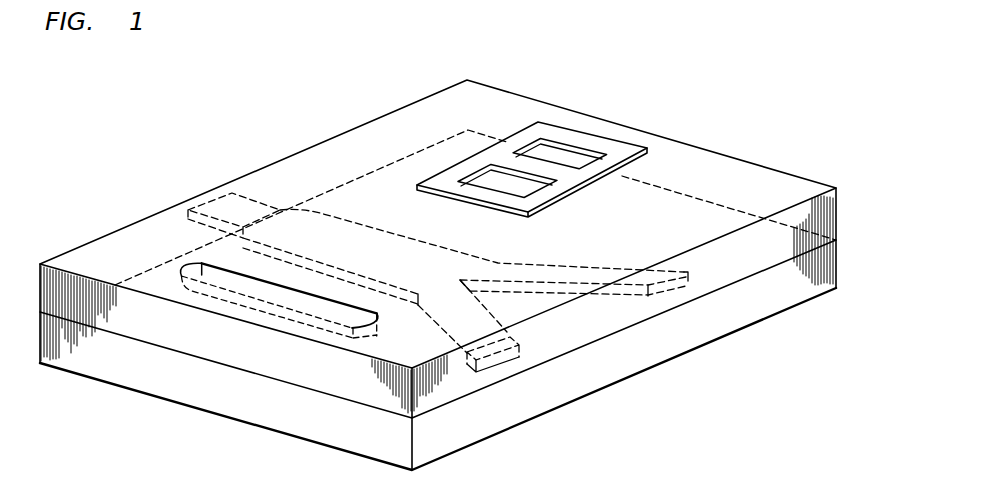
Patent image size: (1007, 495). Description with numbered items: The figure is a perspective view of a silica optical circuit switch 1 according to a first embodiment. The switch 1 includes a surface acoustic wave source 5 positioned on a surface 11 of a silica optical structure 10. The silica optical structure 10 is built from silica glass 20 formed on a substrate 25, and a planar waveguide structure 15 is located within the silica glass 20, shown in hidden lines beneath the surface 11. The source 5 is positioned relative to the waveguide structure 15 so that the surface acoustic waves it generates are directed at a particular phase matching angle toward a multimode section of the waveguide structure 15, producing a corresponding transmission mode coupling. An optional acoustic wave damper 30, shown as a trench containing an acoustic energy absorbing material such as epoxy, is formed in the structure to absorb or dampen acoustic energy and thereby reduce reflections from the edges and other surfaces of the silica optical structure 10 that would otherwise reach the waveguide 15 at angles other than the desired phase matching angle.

The switch 1 is at (236, 103).
The surface acoustic wave (SAW) source 5 is at (570, 130).
The silica optical structure 10 is at (200, 408).
The surface 11 is at (642, 131).
The planar waveguide structure 15 is at (258, 199).
The silica glass 20 is at (837, 206).
The substrate 25 is at (837, 261).
The acoustic wave damper 30 is at (237, 300).